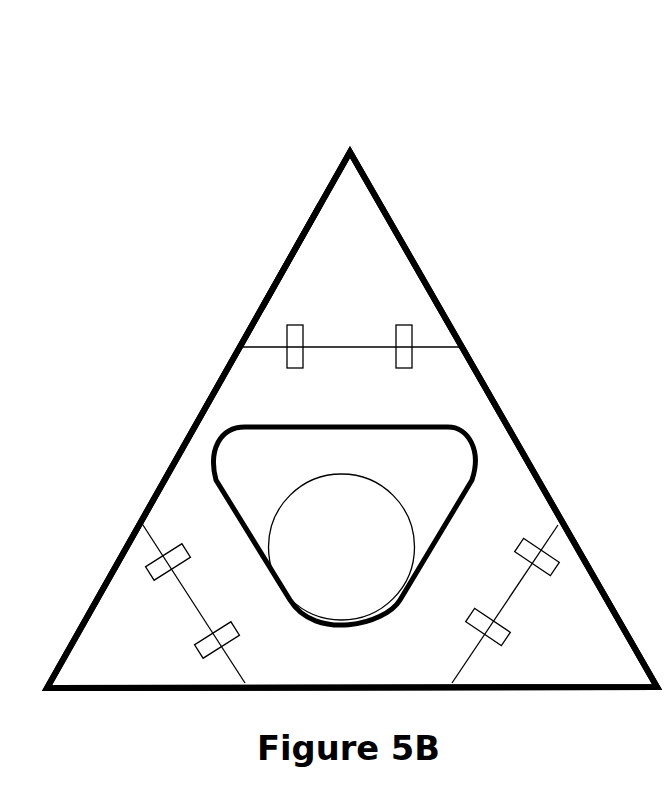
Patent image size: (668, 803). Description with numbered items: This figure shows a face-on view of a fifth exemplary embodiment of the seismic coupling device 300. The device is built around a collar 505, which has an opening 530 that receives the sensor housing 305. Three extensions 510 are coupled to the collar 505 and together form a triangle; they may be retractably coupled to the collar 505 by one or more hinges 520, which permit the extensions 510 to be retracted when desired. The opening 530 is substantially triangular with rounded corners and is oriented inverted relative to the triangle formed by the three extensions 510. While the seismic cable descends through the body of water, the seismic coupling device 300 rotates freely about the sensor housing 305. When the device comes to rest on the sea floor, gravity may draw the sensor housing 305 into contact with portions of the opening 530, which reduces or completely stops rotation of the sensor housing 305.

The seismic coupling device 300 is at (364, 98).
The collar 505 is at (198, 412).
The extensions 510 is at (290, 252).
The hinges 520 is at (287, 337).
The opening 530 is at (444, 456).
The sensor housing 305 is at (342, 547).